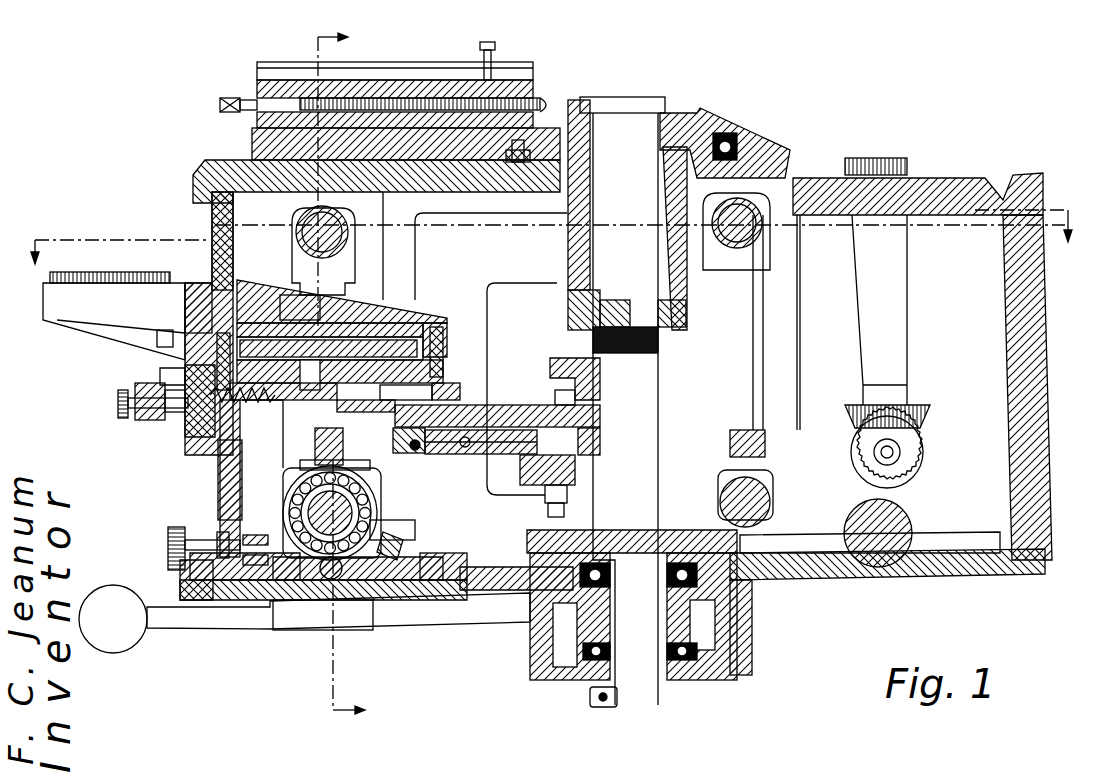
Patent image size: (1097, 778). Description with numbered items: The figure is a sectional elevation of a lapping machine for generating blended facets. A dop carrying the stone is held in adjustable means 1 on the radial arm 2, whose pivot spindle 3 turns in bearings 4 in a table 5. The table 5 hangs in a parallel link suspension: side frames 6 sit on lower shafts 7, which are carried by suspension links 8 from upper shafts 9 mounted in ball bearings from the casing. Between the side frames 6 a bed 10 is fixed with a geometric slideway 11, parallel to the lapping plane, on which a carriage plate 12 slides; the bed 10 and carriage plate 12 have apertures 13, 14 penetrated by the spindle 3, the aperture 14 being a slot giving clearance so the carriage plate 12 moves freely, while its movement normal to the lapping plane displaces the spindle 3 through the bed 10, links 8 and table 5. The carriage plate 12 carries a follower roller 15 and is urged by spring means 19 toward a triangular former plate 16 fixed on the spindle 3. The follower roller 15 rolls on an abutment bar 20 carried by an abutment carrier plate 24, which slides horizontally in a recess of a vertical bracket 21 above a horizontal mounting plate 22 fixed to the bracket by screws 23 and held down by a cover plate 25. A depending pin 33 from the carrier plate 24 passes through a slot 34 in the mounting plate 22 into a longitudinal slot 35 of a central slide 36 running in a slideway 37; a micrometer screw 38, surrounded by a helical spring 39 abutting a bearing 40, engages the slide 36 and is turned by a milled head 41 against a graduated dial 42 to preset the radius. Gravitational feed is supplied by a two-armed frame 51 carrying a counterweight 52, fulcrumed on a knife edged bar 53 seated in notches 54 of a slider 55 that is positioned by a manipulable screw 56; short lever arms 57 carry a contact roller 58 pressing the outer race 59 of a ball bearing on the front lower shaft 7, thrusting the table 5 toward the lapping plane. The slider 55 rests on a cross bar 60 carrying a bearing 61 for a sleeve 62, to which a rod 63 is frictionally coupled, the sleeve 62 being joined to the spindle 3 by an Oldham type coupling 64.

The adjustable means 1 is at (353, 105).
The radial arm 2 is at (448, 130).
The pivot spindle 3 is at (615, 268).
The bearings 4 is at (568, 245).
The platform or table 5 is at (400, 176).
The side frames 6 is at (470, 478).
The lower shafts 7 is at (790, 578).
The suspension links or frames 8 is at (752, 358).
The upper shafts 9 is at (305, 218).
The bed 10 is at (495, 442).
The geometric slideway 11 is at (460, 443).
The carriage plate 12 is at (512, 410).
The aperture 13 is at (600, 440).
The aperture 14 is at (600, 410).
The follower roller 15 is at (450, 372).
The triangular former plate 16 is at (570, 365).
The spring means 19 is at (416, 450).
The abutment bar 20 is at (468, 395).
The vertical bracket 21 is at (400, 318).
The horizontal mounting plate 22 is at (417, 332).
The screws 23 is at (455, 350).
The abutment carrier plate 24 is at (430, 338).
The cover plate 25 is at (285, 325).
The depending pin 33 is at (203, 240).
The slot 34 is at (207, 260).
The longitudinal slot 35 is at (303, 402).
The central slide 36 is at (320, 430).
The slideway 37 is at (265, 406).
The micrometer screw 38 is at (218, 452).
The helical spring 39 is at (200, 432).
The bearing 40 is at (190, 433).
The milled head 41 is at (160, 419).
The graduated dial 42 is at (185, 376).
The two-armed frame 51 is at (826, 555).
The counterweight 52 is at (885, 538).
The fulcrum knife edged bar 53 is at (412, 543).
The notches 54 is at (410, 582).
The slider 55 is at (290, 563).
The manipulable screw 56 is at (248, 548).
The short lever arms 57 is at (362, 603).
The contact roller 58 is at (336, 582).
The outer race of ball bearing 59 is at (292, 504).
The cross plate or bar 60 is at (503, 590).
The bearing 61 is at (575, 684).
The sleeve 62 is at (622, 633).
The rod 63 is at (488, 620).
The Oldham type coupling 64 is at (757, 585).